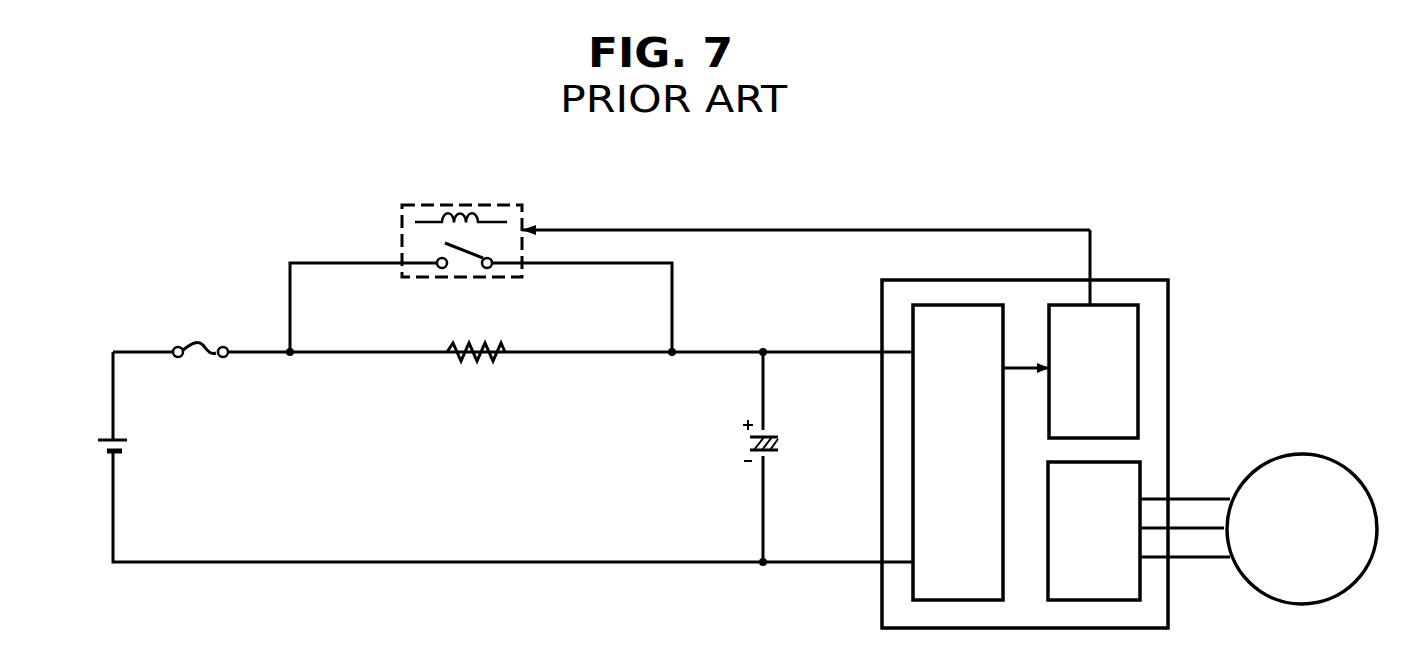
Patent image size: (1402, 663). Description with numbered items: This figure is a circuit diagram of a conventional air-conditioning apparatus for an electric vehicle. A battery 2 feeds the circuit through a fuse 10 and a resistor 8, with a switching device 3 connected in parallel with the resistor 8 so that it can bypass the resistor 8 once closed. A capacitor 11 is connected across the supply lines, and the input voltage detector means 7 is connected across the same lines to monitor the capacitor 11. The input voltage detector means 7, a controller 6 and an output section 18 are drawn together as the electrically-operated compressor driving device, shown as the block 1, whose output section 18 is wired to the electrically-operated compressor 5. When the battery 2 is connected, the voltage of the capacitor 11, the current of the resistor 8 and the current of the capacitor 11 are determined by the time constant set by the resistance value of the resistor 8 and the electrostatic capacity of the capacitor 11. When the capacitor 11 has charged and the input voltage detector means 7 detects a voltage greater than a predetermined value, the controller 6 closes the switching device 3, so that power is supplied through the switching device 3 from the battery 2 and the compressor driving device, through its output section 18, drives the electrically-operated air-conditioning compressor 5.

The control unit 1 is at (1128, 280).
The battery 2 is at (127, 440).
The switching device 3 is at (447, 204).
The electrically-operated compressor 5 is at (1303, 453).
The controller 6 is at (1138, 340).
The input voltage detector means 7 is at (947, 304).
The resistor 8 is at (490, 345).
The fuse 10 is at (200, 345).
The capacitor 11 is at (772, 433).
The output section 18 is at (1142, 475).